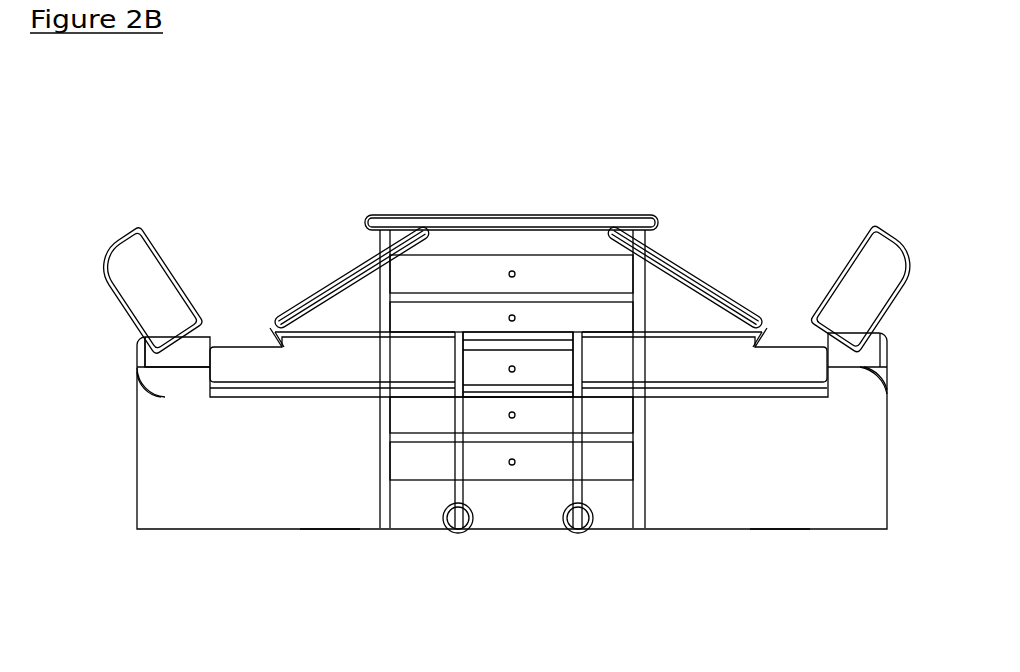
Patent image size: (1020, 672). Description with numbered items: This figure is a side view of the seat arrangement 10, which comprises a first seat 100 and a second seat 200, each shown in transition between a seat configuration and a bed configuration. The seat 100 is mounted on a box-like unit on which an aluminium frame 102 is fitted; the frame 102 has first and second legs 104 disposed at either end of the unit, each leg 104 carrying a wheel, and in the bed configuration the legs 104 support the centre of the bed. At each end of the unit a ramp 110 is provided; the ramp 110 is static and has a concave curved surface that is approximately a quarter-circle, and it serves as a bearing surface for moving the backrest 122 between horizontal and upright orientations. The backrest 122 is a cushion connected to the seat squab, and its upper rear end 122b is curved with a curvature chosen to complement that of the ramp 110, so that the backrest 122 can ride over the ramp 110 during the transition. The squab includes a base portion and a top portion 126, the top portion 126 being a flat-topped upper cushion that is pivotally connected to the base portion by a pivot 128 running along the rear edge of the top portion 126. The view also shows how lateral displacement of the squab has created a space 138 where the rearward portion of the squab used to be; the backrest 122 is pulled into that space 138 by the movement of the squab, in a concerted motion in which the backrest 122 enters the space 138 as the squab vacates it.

The seat arrangement 10 is at (740, 187).
The first seat 100 is at (327, 563).
The second seat 200 is at (777, 564).
The frame 102 is at (337, 393).
The legs 104 is at (457, 487).
The ramp 110 is at (137, 383).
The backrest 122 is at (138, 277).
The upper rear end of the backrest 122b is at (115, 253).
The top portion 126 is at (333, 268).
The pivot 128 is at (267, 328).
The space 138 is at (182, 388).